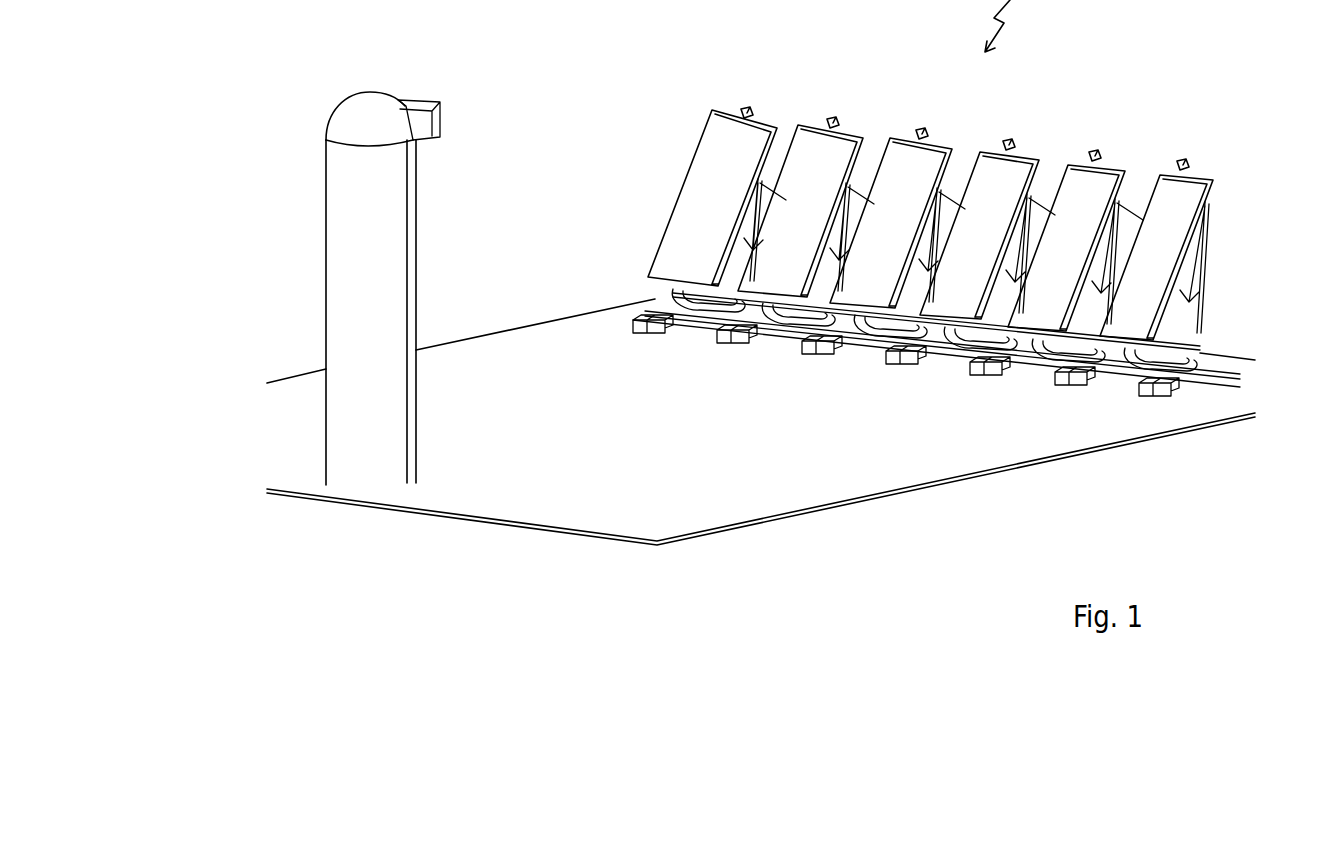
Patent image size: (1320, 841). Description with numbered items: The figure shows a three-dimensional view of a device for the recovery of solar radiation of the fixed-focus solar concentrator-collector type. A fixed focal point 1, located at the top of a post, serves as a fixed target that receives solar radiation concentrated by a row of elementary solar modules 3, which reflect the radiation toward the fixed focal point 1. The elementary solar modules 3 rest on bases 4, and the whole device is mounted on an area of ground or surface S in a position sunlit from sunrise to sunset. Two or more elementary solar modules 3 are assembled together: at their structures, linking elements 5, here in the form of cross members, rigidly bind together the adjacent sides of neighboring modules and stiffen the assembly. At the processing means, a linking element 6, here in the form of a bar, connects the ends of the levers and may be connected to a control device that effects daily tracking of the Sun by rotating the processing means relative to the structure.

The fixed focal point 1 is at (378, 110).
The elementary solar modules 3 is at (823, 160).
The bases 4 is at (905, 363).
The linking elements 5 is at (1040, 227).
The linking element 6 is at (962, 338).
The surface S is at (761, 422).